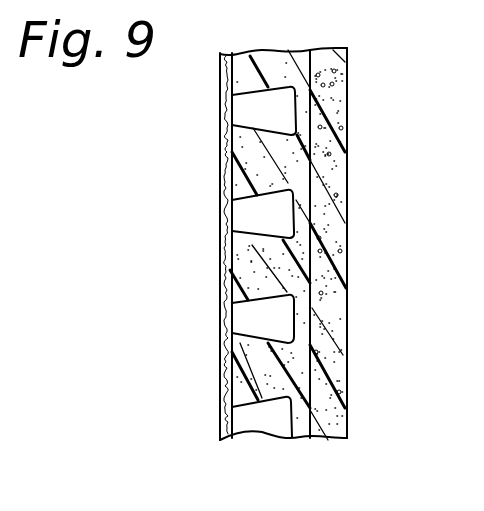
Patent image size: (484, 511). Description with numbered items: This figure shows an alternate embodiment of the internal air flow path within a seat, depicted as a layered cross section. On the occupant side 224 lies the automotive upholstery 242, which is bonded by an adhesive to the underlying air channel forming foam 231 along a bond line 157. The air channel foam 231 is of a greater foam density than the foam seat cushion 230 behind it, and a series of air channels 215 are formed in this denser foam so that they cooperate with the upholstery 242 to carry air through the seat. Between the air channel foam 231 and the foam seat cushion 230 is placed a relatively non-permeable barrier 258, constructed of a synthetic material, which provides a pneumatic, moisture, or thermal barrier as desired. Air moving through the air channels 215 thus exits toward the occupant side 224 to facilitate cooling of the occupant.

The occupant side 224 is at (220, 103).
The bond line 157 is at (230, 272).
The air channels 215 is at (248, 208).
The automotive upholstery 242 is at (220, 412).
The air channel forming foam 231 is at (267, 383).
The relatively non-permeable barrier 258 is at (310, 305).
The foam seat cushion 230 is at (345, 164).